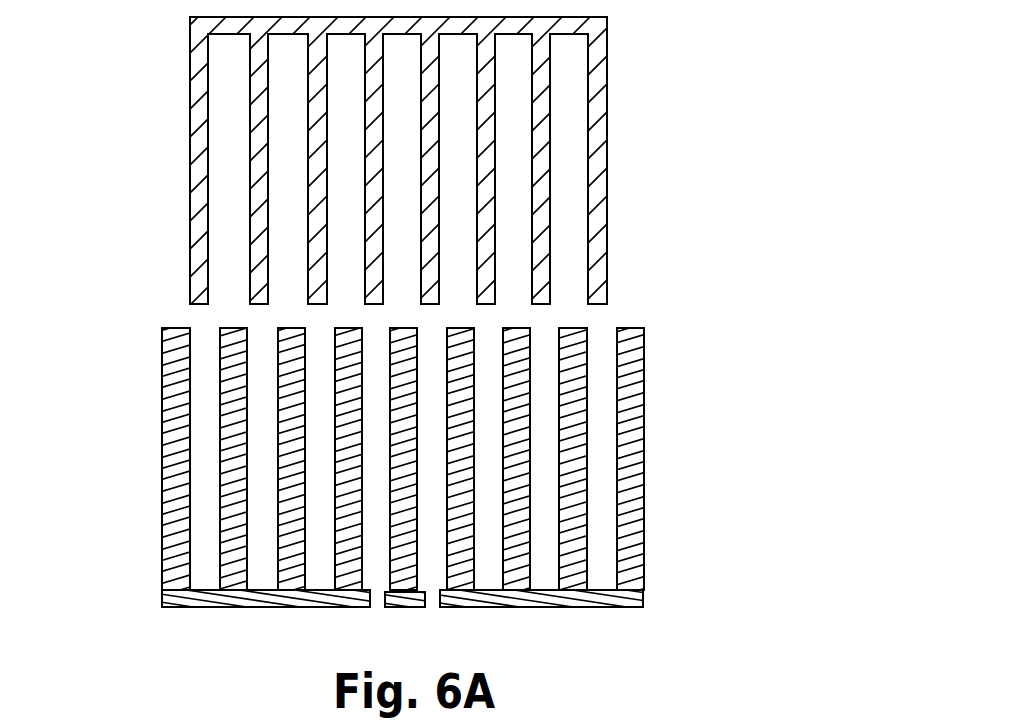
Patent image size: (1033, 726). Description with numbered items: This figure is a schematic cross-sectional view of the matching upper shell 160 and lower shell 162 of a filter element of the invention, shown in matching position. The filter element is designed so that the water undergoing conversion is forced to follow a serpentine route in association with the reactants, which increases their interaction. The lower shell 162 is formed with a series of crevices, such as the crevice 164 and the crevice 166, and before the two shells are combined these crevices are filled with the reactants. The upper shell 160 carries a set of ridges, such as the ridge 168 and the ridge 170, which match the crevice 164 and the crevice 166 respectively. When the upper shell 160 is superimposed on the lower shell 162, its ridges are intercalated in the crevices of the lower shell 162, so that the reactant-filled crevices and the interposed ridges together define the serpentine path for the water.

The upper shell 160 is at (457, 160).
The lower shell 162 is at (465, 445).
The crevice 164 is at (200, 333).
The crevice 166 is at (600, 333).
The ridge 168 is at (192, 180).
The ridge 170 is at (608, 172).